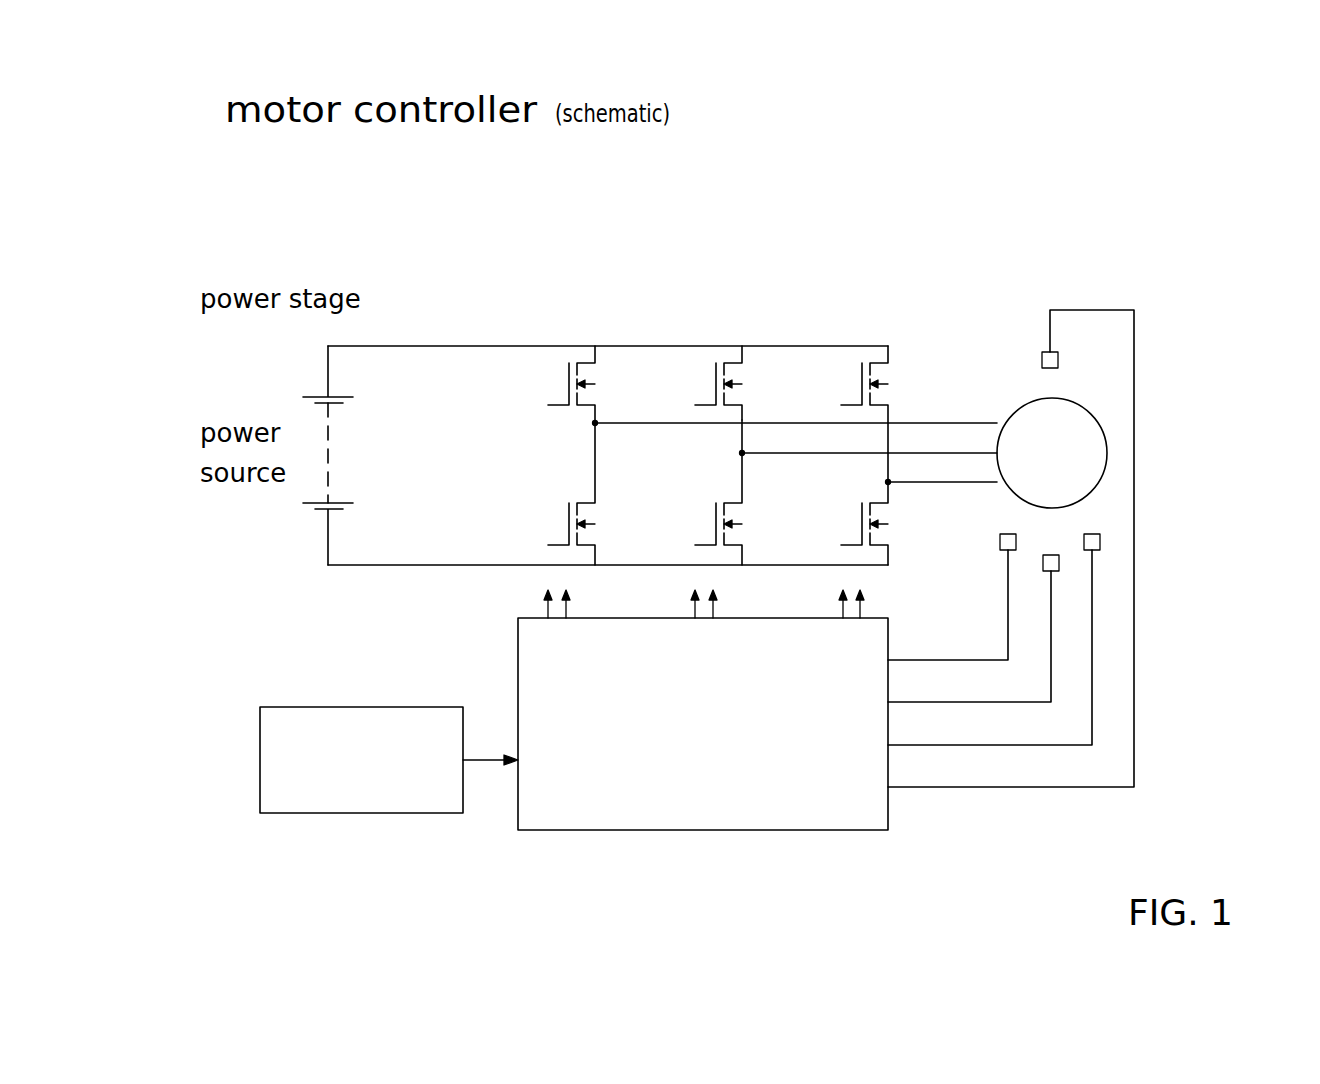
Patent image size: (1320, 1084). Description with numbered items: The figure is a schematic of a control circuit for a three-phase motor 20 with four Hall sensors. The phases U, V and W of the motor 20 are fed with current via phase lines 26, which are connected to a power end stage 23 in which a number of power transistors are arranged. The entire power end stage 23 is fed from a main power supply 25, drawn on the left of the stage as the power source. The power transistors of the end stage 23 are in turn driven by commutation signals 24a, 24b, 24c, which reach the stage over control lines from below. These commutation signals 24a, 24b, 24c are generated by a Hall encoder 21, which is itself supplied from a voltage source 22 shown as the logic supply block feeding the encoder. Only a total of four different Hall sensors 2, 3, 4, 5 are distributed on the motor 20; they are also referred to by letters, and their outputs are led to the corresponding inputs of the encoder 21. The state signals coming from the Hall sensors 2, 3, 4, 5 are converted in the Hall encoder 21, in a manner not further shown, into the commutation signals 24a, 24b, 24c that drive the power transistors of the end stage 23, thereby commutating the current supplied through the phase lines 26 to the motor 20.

The Hall sensor 2 is at (1014, 537).
The Hall sensor 3 is at (1055, 570).
The Hall sensor 4 is at (1100, 548).
The Hall sensor 5 is at (1058, 364).
The three-phase motor 20 is at (1080, 452).
The Hall encoder 21 is at (822, 780).
The voltage source 22 is at (388, 807).
The power end stage 23 is at (753, 378).
The commutation signal 24a is at (557, 608).
The commutation signal 24b is at (694, 410).
The commutation signal 24c is at (853, 610).
The main power supply 25 is at (329, 447).
The phase lines 26 is at (982, 482).